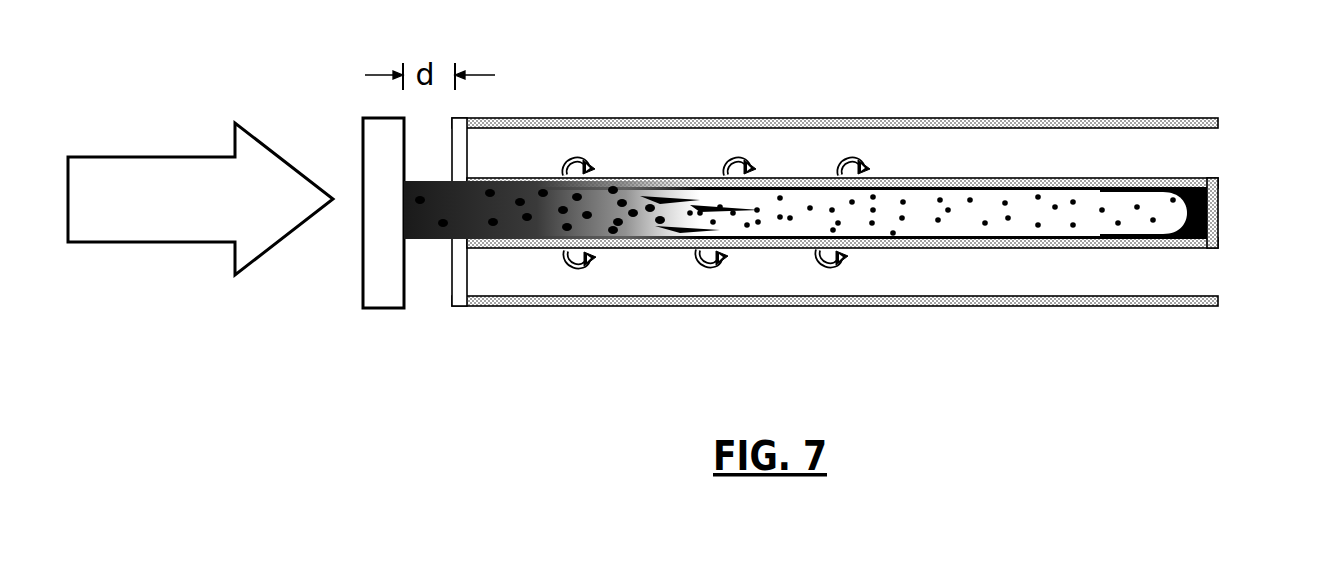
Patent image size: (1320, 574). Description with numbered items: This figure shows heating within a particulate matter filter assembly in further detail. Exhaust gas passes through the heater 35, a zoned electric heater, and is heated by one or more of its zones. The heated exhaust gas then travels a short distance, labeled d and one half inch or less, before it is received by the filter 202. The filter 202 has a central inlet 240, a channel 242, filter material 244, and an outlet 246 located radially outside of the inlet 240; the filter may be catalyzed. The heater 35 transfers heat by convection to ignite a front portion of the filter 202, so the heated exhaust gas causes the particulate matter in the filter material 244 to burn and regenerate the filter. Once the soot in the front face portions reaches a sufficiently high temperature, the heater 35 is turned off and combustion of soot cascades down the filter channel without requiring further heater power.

The heater 35 is at (178, 242).
The filter 202 is at (733, 120).
The central inlet 240 is at (436, 244).
The channel 242 is at (918, 190).
The filter material 244 is at (877, 183).
The outlet 246 is at (1215, 158).